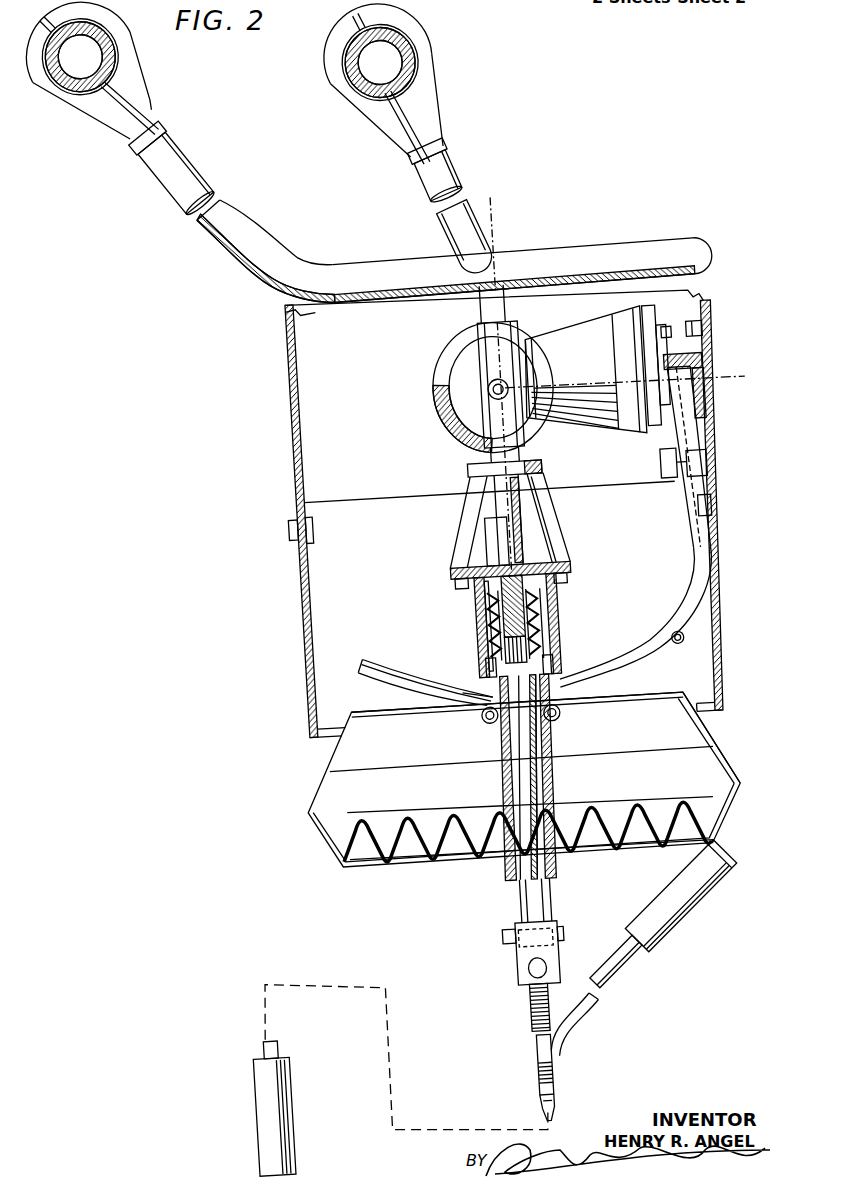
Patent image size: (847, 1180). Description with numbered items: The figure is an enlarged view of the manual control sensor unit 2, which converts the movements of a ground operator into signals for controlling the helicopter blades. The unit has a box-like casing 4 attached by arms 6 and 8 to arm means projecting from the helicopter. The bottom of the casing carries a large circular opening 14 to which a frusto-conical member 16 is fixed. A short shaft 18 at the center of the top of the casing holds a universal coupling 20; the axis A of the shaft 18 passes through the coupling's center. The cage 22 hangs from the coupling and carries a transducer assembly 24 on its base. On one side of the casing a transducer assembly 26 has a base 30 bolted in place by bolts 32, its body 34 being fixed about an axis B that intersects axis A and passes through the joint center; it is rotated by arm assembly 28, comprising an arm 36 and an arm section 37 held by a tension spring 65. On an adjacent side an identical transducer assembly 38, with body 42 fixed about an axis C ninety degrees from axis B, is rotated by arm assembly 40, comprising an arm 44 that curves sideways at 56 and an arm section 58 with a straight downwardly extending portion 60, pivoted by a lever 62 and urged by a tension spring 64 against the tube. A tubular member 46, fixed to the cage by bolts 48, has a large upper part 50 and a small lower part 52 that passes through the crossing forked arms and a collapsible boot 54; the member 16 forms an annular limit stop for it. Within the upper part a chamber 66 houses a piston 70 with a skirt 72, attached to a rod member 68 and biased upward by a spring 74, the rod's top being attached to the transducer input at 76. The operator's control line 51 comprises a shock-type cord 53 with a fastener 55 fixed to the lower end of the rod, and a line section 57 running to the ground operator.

The manual control sensor unit 2 is at (713, 445).
The casing 4 is at (709, 369).
The arm 6 is at (250, 213).
The arm 8 is at (466, 160).
The circular opening 14 is at (679, 719).
The frusto-conical member 16 is at (699, 738).
The shaft 18 is at (471, 288).
The universal coupling 20 is at (474, 364).
The cage 22 is at (552, 545).
The transducer assembly 24 is at (466, 543).
The transducer assembly 26 is at (574, 332).
The arm assembly 28 is at (697, 561).
The base 30 is at (708, 420).
The bolts 32 is at (710, 345).
The body 34 is at (567, 436).
The arm 36 is at (539, 707).
The arm section 37 is at (690, 624).
The transducer assembly 38 is at (434, 414).
The arm assembly 40 is at (469, 672).
The body 42 is at (454, 341).
The arm 44 is at (457, 644).
The tubular member 46 is at (544, 721).
The bolts 48 is at (556, 587).
The upper part 50 is at (540, 613).
The control line 51 is at (485, 1026).
The lower part 52 is at (523, 779).
The shock-type cord 53 is at (490, 1007).
The boot 54 is at (553, 852).
The fastener 55 is at (525, 948).
The side curve 56 is at (465, 598).
The line section 57 is at (580, 964).
The arm section 58 is at (538, 686).
The straight downwardly extending portion 60 is at (560, 440).
The lever 62 is at (509, 486).
The tension spring 64 is at (467, 711).
The tension spring 65 is at (670, 650).
The chamber 66 is at (542, 655).
The rod member 68 is at (530, 746).
The piston 70 is at (534, 605).
The skirt 72 is at (529, 628).
The spring 74 is at (472, 615).
The attachment point 76 is at (535, 560).
The axis A— A is at (494, 372).
The axis B— B is at (487, 390).
The axis C is at (490, 388).